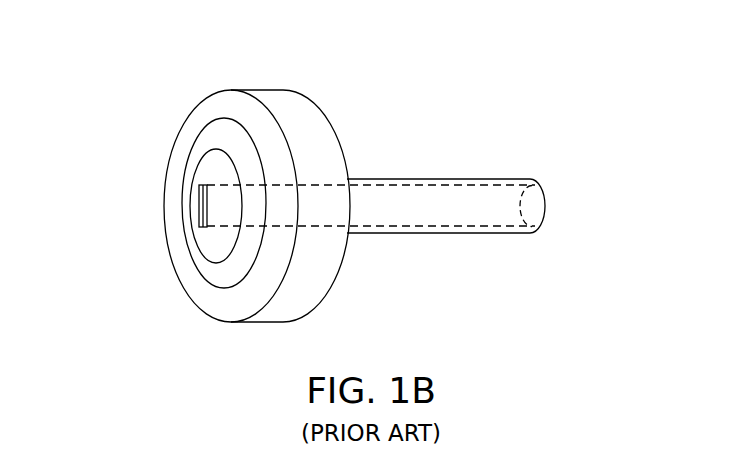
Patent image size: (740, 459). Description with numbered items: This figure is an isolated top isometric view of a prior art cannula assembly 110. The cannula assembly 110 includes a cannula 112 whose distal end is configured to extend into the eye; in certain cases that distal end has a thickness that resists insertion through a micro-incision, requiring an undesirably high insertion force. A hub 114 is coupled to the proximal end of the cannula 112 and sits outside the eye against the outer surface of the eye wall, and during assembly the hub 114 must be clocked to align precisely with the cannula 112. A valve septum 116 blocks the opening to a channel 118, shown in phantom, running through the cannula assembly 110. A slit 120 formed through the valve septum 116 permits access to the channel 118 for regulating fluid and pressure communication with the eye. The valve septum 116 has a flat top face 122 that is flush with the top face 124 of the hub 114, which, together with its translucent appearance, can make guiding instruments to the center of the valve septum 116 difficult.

The cannula assembly 110 is at (173, 93).
The cannula 112 is at (455, 180).
The hub 114 is at (310, 120).
The valve septum 116 is at (198, 173).
The channel 118 is at (541, 207).
The slit 120 is at (200, 207).
The flat top face 122 is at (200, 242).
The top face 124 is at (230, 108).